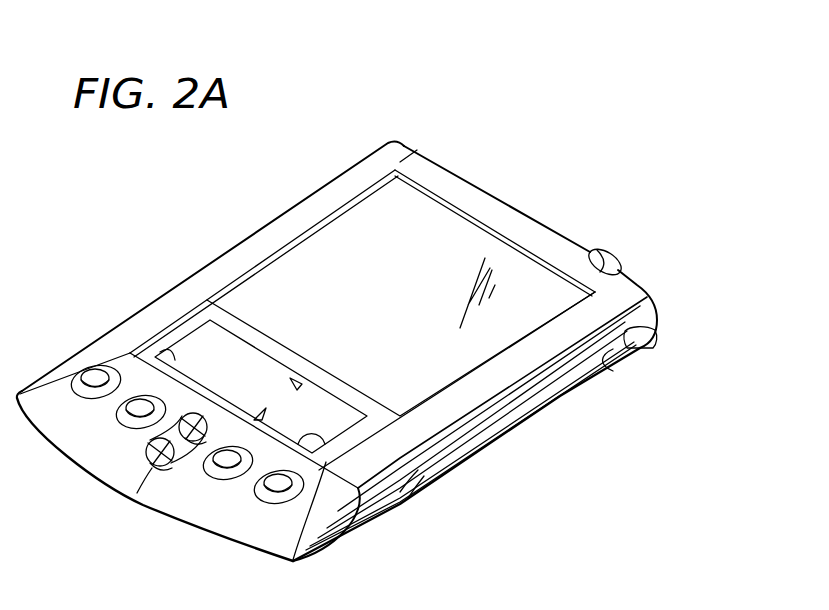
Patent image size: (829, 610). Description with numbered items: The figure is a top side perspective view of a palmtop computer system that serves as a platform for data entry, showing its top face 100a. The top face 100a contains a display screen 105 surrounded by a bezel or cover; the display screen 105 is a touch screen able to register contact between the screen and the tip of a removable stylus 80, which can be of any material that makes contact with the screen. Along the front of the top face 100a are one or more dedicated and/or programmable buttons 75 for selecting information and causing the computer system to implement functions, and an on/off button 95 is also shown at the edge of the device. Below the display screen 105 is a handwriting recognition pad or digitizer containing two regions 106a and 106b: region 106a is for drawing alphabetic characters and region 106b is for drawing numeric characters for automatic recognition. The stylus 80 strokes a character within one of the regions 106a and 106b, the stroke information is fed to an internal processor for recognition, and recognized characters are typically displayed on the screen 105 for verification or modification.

The top face 100a is at (172, 158).
The display screen 105 is at (413, 232).
The region 106a is at (238, 362).
The region 106b is at (313, 415).
The on/off button 95 is at (605, 262).
The stylus 80 is at (498, 422).
The buttons 75 is at (98, 377).